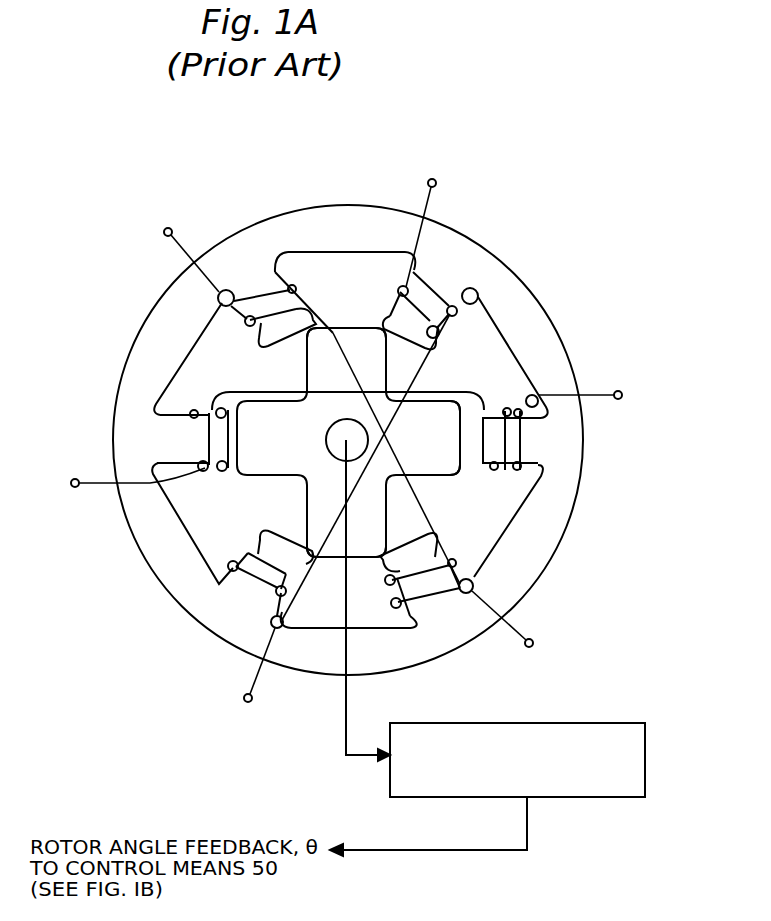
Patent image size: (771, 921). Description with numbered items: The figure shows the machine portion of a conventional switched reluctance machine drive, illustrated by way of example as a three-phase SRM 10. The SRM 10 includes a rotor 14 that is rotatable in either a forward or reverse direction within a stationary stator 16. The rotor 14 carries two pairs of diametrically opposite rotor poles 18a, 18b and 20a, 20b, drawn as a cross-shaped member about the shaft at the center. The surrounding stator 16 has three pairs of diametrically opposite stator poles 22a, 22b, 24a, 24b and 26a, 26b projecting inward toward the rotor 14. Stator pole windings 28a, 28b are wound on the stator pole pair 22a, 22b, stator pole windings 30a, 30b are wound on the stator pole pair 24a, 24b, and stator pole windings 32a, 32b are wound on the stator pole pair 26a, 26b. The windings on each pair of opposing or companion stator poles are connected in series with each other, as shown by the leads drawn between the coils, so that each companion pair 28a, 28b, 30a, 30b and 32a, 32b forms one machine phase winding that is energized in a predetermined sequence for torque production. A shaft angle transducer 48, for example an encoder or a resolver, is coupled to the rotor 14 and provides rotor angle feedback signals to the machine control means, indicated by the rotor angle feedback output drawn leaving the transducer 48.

The SRM 10 is at (500, 226).
The rotor 14 is at (450, 472).
The stator 16 is at (162, 320).
The rotor pole 18a is at (266, 467).
The rotor pole 18b is at (446, 407).
The rotor pole 20a is at (347, 330).
The rotor pole 20b is at (332, 552).
The stator pole 22a is at (160, 422).
The stator pole 22b is at (545, 400).
The stator pole 24a is at (283, 290).
The stator pole 24b is at (403, 630).
The stator pole 26a is at (480, 290).
The stator pole 26b is at (232, 589).
The stator pole winding 28a is at (198, 471).
The stator pole winding 28b is at (526, 437).
The stator pole winding 30a is at (243, 296).
The stator pole winding 30b is at (462, 570).
The stator pole winding 32a is at (403, 290).
The stator pole winding 32b is at (262, 592).
The shaft angle transducer 48 is at (588, 798).